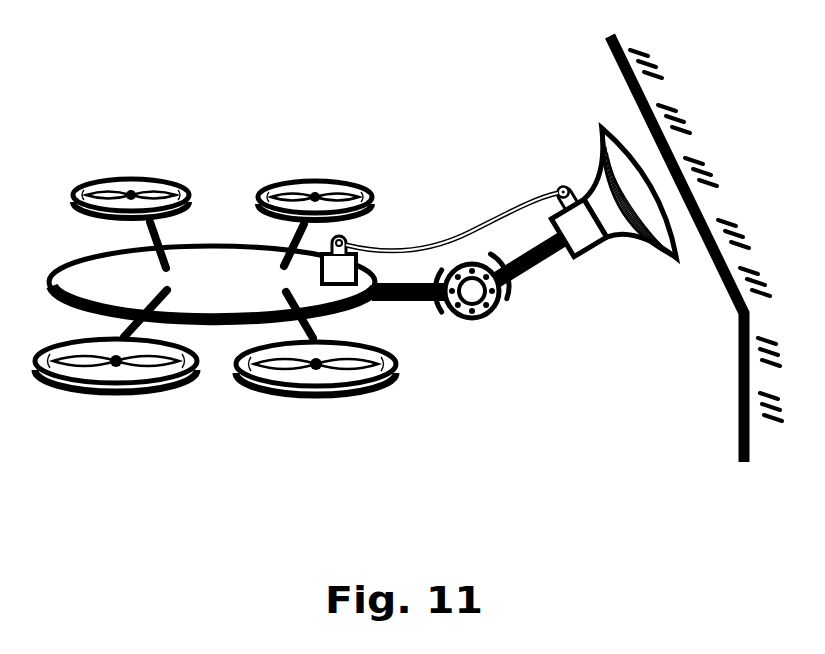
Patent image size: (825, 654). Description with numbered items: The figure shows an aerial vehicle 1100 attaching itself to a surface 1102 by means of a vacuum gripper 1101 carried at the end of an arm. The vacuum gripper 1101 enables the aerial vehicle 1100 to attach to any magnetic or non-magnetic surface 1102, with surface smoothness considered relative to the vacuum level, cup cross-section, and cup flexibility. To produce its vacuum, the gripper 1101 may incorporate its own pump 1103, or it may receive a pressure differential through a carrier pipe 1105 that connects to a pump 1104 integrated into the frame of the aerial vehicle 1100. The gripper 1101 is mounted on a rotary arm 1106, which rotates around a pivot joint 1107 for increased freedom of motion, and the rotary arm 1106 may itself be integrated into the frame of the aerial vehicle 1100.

The aerial vehicle 1100 is at (221, 340).
The vacuum gripper 1101 is at (628, 260).
The surface 1102 is at (602, 70).
The pump 1103 is at (592, 258).
The pump 1104 is at (360, 237).
The carrier pipe 1105 is at (428, 227).
The rotary arm 1106 is at (532, 276).
The pivot joint 1107 is at (458, 340).